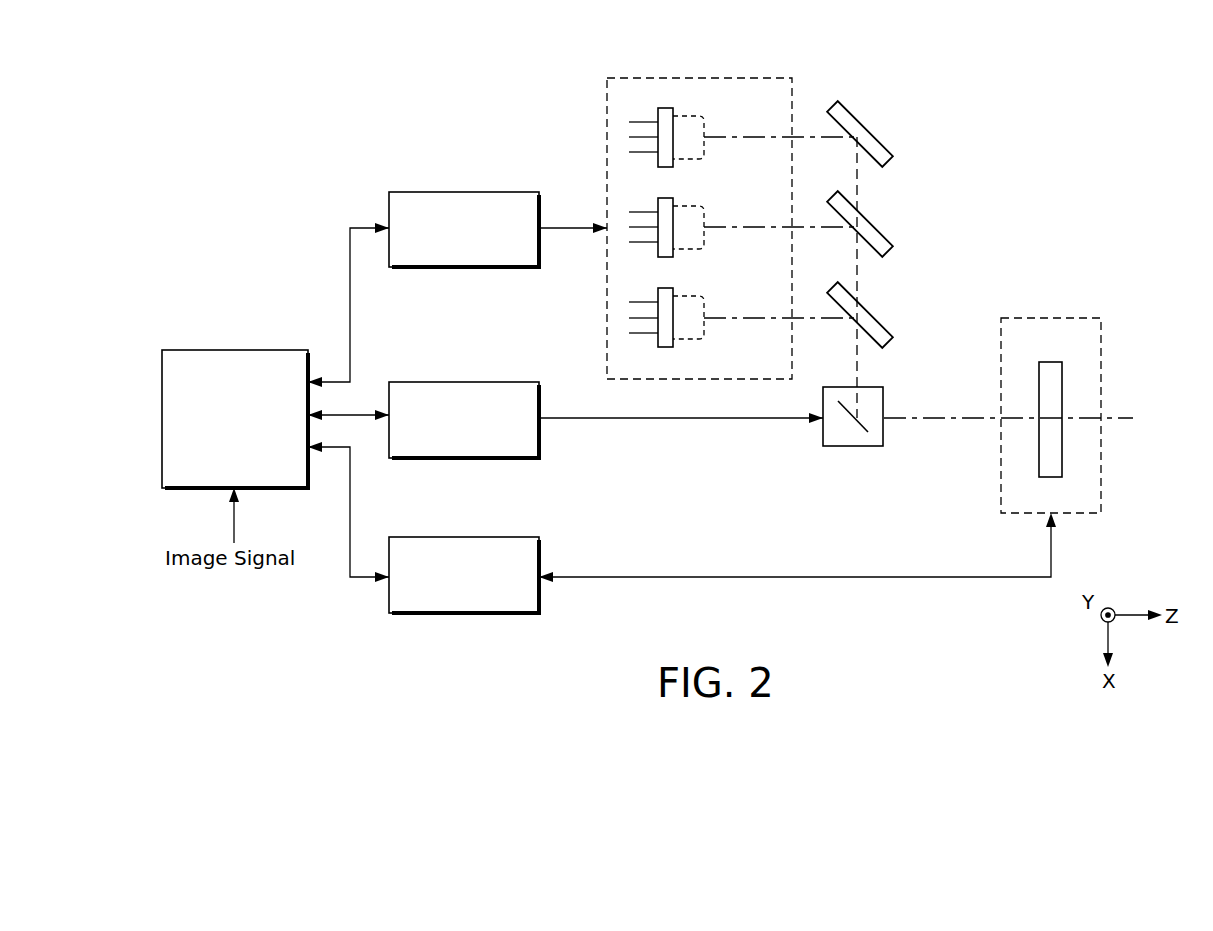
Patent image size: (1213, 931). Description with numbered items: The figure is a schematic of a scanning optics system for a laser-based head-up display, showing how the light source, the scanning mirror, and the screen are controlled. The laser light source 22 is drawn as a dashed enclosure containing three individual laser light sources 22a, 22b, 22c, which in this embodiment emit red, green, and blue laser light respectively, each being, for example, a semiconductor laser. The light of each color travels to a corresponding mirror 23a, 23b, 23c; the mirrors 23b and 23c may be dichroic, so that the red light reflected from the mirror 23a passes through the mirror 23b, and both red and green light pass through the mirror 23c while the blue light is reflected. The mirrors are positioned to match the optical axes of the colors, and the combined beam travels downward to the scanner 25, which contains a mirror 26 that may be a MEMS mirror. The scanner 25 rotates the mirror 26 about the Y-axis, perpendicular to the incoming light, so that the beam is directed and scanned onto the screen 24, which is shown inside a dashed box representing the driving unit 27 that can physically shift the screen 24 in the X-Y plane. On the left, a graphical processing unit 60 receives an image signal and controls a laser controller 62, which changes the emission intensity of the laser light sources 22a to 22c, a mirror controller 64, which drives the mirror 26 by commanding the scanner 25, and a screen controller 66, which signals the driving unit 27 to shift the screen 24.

The laser light source 22 is at (700, 76).
The laser light source 22a is at (706, 155).
The laser light source 22b is at (706, 245).
The laser light source 22c is at (706, 335).
The mirror 23a is at (873, 122).
The mirror 23b is at (873, 212).
The mirror 23c is at (873, 303).
The screen 24 is at (1062, 366).
The scanner 25 is at (822, 432).
The mirror 26 is at (860, 428).
The driving unit 27 is at (1050, 317).
The graphical processing unit 60 is at (235, 348).
The laser controller 62 is at (463, 190).
The mirror controller 64 is at (463, 380).
The screen controller 66 is at (463, 535).